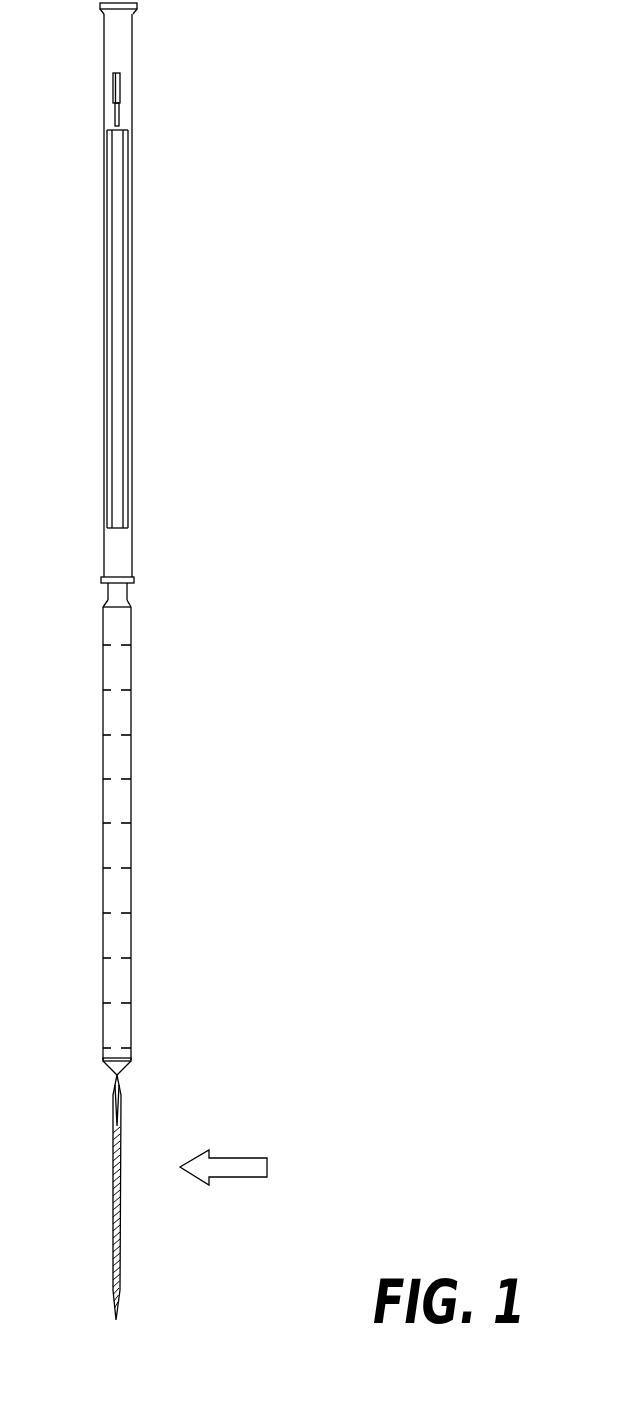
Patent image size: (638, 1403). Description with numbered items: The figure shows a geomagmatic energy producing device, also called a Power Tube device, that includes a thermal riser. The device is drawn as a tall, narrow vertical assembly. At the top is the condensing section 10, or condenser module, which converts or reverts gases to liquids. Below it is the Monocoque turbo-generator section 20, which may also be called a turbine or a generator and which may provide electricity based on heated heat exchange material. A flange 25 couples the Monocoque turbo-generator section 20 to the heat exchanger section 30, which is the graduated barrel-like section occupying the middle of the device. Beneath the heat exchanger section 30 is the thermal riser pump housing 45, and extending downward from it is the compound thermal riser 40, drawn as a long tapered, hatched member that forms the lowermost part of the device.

The condensing section 10 is at (243, 277).
The Monocoque turbo-generator section 20 is at (160, 558).
The flange 25 is at (168, 604).
The heat exchanger section 30 is at (168, 876).
The thermal riser pump housing 45 is at (168, 1054).
The compound thermal riser 40 is at (245, 1158).